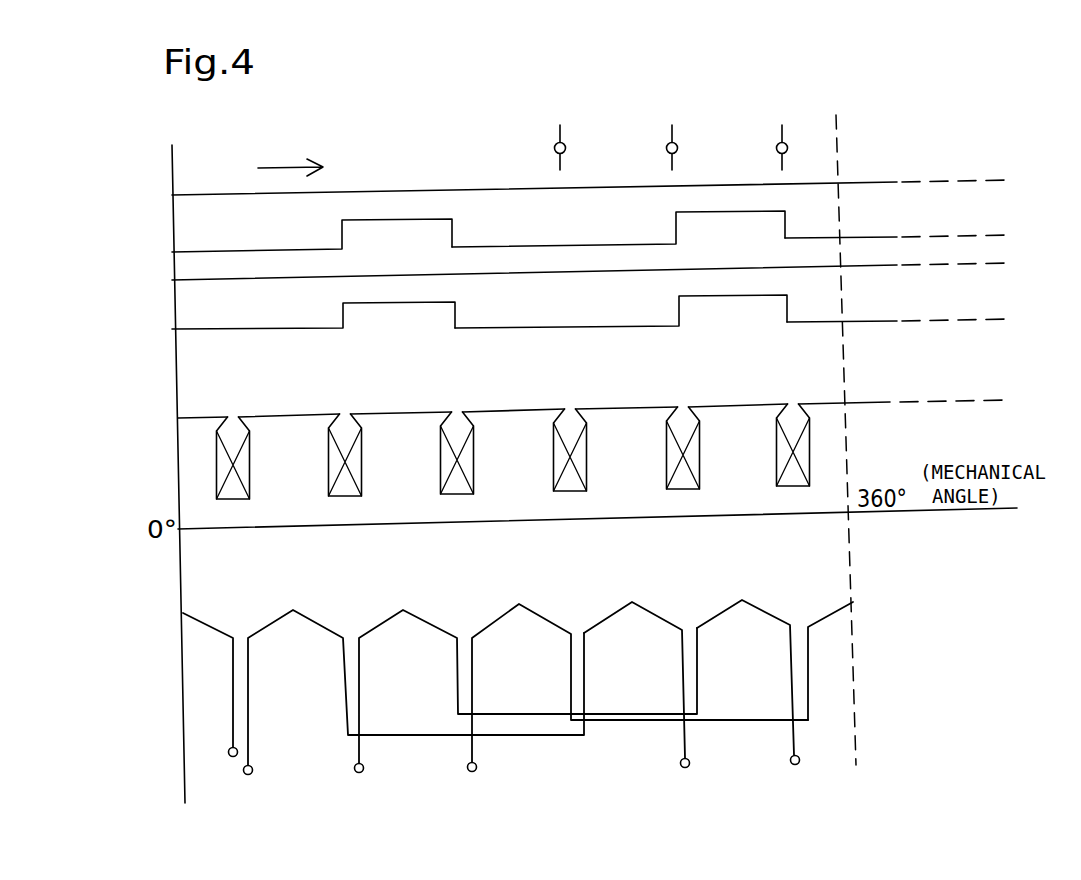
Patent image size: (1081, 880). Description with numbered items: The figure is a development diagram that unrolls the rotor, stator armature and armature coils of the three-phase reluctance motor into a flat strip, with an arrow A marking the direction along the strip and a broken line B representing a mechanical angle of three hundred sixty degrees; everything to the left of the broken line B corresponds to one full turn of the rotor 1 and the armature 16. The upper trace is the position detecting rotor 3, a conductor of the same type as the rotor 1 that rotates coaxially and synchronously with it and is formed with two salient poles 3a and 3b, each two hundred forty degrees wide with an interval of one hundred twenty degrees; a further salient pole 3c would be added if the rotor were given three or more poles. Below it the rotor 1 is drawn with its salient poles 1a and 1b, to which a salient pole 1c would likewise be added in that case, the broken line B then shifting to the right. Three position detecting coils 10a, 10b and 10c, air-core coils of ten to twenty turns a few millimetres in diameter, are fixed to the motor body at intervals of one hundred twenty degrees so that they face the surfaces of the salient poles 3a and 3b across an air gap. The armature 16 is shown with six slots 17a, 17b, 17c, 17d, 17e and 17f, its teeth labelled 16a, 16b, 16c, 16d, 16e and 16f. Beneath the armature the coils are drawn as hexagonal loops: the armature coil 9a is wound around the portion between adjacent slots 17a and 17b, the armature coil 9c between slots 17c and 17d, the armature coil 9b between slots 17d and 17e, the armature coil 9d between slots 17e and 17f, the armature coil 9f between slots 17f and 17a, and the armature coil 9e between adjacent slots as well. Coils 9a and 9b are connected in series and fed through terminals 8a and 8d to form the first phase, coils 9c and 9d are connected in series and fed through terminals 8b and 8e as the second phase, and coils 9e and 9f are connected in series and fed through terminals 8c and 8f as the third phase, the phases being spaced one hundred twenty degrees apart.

The rotor 1 is at (332, 280).
The salient pole 1a is at (244, 329).
The salient pole 1b is at (541, 328).
The salient pole 1c is at (866, 322).
The position detecting rotor 3 is at (331, 194).
The salient pole 3a is at (237, 251).
The salient pole 3b is at (540, 246).
The salient pole 3c is at (857, 237).
The terminal 8a is at (251, 775).
The terminal 8b is at (360, 773).
The terminal 8c is at (474, 772).
The terminal 8d is at (688, 768).
The terminal 8e is at (797, 765).
The terminal 8f is at (230, 757).
The armature coil 9a is at (317, 620).
The armature coil 9b is at (652, 613).
The armature coil 9c is at (425, 619).
The armature coil 9d is at (760, 610).
The armature coil 9e is at (533, 614).
The armature coil 9f is at (838, 612).
The position detecting coil 10a is at (563, 143).
The position detecting coil 10b is at (675, 143).
The position detecting coil 10c is at (785, 143).
The armature 16 is at (543, 512).
The armature slot portion 16a is at (274, 415).
The armature slot portion 16b is at (388, 413).
The armature slot portion 16c is at (498, 411).
The armature slot portion 16d is at (612, 408).
The armature slot portion 16e is at (718, 406).
The armature slot portion 16f is at (805, 403).
The slot 17a is at (240, 500).
The slot 17b is at (351, 497).
The slot 17c is at (462, 495).
The slot 17d is at (575, 492).
The slot 17e is at (688, 490).
The slot 17f is at (798, 487).
The rotation direction arrow A is at (288, 167).
The broken line B is at (851, 444).